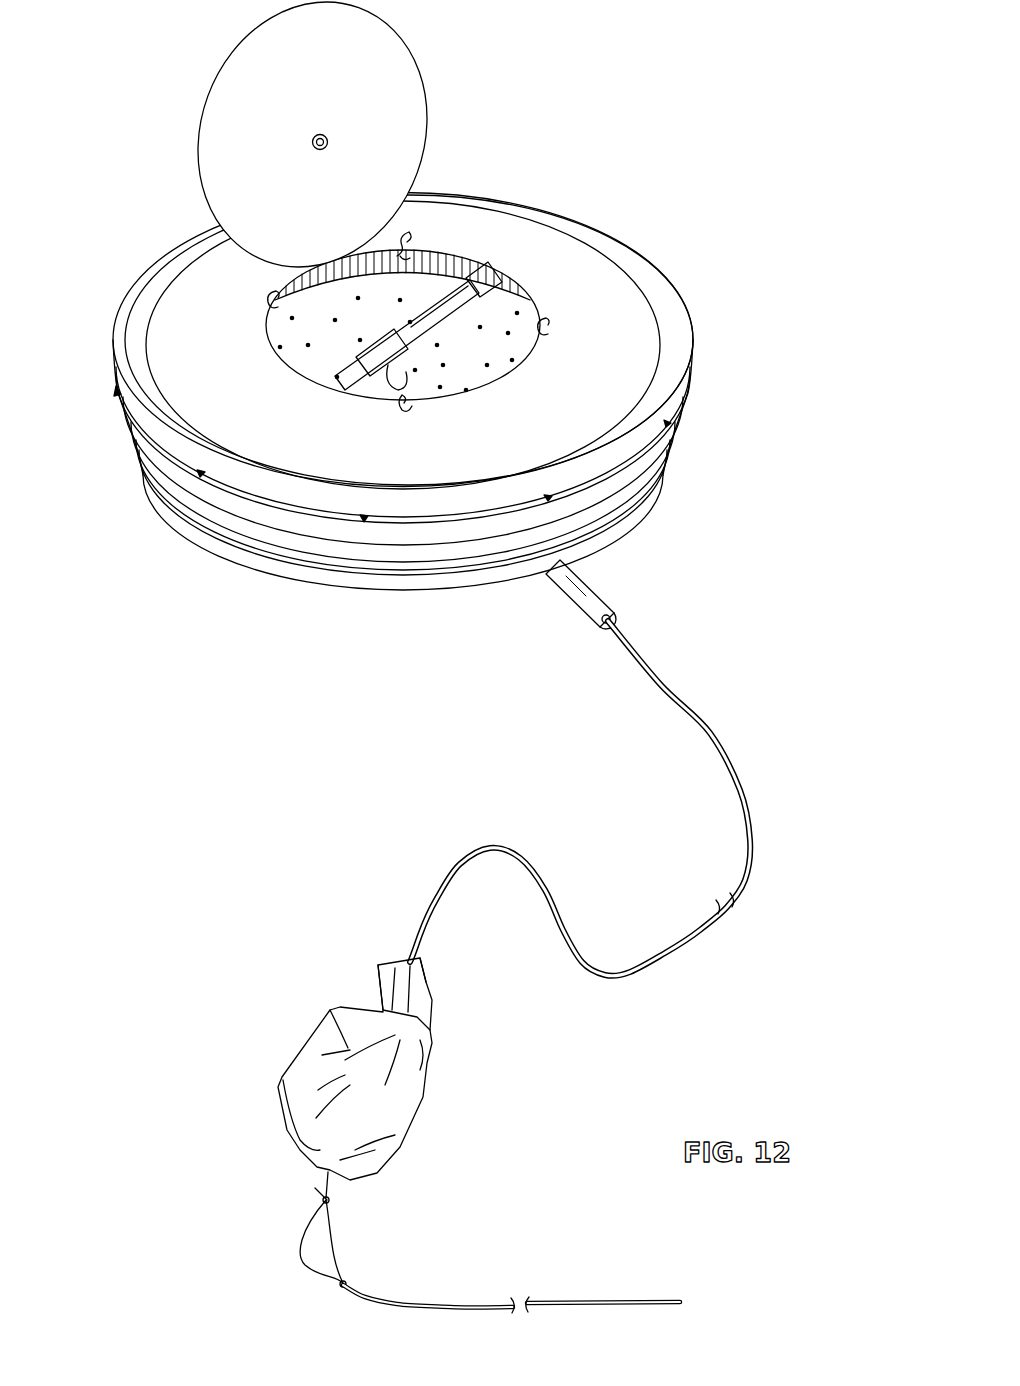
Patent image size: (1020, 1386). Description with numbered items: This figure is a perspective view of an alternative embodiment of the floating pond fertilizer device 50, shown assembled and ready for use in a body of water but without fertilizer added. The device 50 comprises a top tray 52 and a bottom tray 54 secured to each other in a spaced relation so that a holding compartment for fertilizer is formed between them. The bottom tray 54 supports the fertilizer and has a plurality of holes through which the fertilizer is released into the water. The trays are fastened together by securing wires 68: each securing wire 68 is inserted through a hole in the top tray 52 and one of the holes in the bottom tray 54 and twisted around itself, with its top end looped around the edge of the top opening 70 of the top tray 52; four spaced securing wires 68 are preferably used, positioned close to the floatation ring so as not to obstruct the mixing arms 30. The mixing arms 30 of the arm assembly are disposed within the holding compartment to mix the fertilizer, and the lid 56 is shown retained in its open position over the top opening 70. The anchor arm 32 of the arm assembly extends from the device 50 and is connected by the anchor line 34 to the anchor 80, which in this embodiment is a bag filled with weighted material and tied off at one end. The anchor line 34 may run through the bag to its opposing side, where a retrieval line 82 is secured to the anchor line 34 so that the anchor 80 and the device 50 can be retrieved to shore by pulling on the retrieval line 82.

The floating pond fertilizer device 50 is at (152, 70).
The lid 56 is at (412, 78).
The top tray 52 is at (608, 276).
The mixing arms 30 is at (482, 262).
The securing wire 68 is at (264, 297).
The top opening 70 is at (478, 346).
The bottom tray 54 is at (640, 516).
The anchor arm 32 is at (598, 583).
The anchor line 34 is at (712, 733).
The anchor 80 is at (320, 1048).
The retrieval line 82 is at (612, 1306).